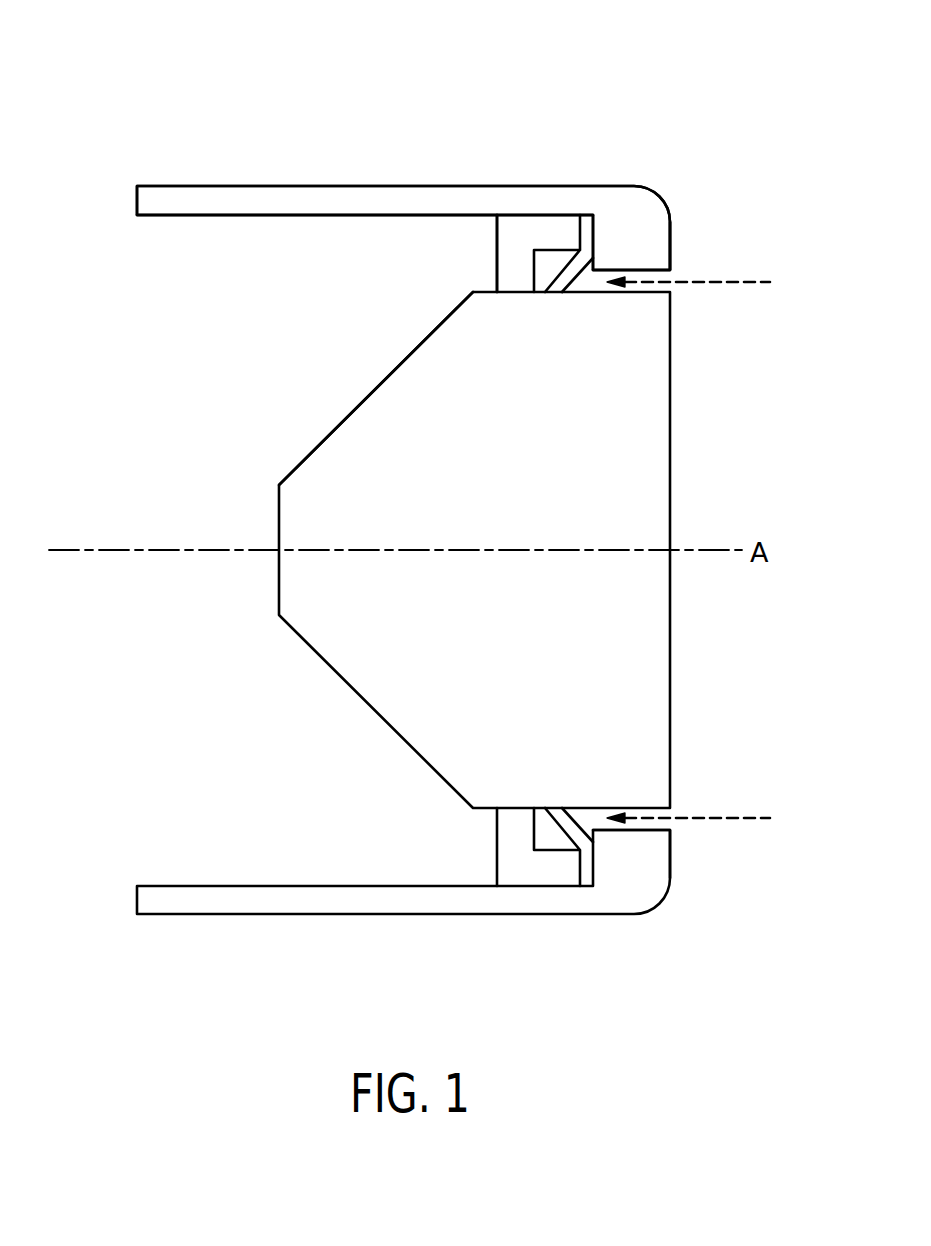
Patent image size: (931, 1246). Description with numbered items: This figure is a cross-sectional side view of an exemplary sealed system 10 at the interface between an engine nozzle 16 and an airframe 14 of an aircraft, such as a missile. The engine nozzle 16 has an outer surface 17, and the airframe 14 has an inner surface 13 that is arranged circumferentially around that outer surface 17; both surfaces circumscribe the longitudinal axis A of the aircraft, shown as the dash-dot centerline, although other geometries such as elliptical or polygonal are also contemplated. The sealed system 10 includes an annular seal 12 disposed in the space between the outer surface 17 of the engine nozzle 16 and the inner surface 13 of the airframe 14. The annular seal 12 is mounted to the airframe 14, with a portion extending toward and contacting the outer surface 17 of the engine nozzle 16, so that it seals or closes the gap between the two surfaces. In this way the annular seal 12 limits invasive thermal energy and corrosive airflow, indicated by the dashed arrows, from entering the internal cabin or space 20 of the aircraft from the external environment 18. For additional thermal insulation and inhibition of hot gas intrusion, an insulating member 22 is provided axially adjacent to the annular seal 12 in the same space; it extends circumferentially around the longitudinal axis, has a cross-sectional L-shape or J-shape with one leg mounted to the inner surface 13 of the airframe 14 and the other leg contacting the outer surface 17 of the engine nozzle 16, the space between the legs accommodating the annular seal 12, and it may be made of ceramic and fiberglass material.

The sealed system 10 is at (133, 98).
The annular seal 12 is at (588, 233).
The inner surface 13 is at (386, 216).
The airframe 14 is at (257, 203).
The engine nozzle 16 is at (416, 708).
The outer surface 17 is at (482, 292).
The external environment 18 is at (722, 898).
The internal cabin or space 20 is at (167, 318).
The insulating member 22 is at (527, 233).